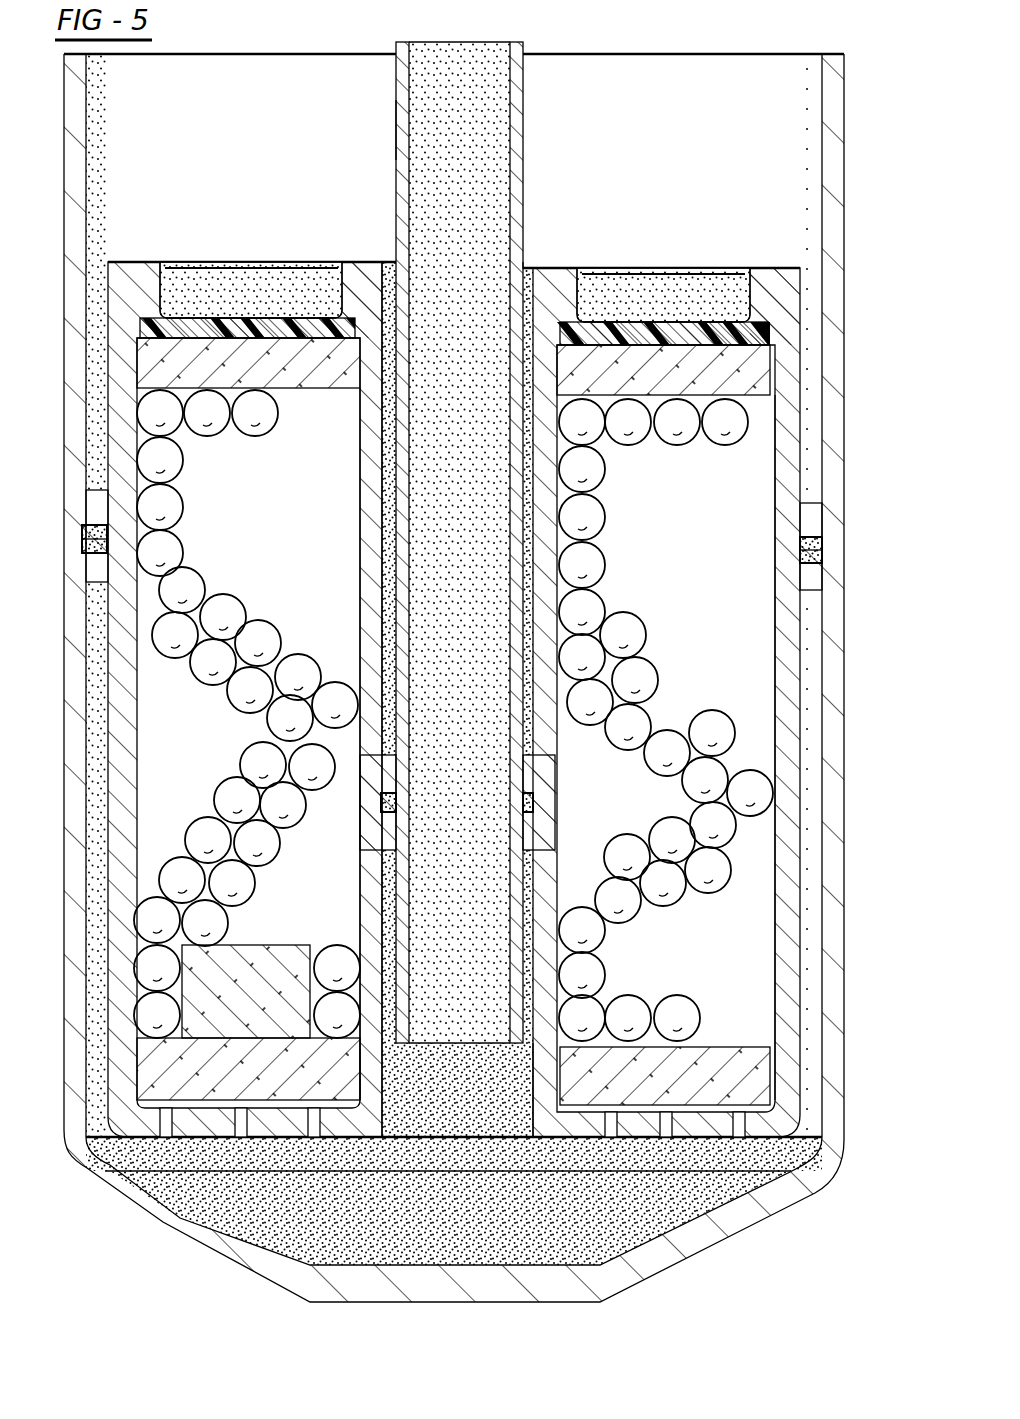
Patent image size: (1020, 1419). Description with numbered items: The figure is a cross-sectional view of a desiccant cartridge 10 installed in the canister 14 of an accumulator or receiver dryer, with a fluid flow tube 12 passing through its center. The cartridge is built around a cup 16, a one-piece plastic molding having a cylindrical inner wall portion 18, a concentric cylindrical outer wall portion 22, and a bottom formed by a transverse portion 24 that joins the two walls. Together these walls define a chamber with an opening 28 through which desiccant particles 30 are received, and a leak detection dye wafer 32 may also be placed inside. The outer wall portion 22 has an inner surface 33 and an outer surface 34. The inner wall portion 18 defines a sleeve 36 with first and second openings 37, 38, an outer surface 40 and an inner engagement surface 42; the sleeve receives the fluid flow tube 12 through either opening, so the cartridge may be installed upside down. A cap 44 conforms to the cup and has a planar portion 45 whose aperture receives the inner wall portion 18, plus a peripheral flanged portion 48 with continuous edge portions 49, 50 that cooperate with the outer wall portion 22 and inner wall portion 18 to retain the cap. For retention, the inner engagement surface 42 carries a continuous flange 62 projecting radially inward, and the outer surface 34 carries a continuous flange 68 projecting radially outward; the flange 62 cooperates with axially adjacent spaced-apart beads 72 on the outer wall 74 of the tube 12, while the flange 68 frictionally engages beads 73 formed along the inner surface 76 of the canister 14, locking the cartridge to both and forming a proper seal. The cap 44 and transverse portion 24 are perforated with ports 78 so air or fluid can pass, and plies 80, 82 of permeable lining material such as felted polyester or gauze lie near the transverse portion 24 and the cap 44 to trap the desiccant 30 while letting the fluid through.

The desiccant cartridge 10 is at (730, 48).
The fluid flow tube 12 is at (514, 124).
The canister 14 is at (834, 92).
The cup 16 is at (97, 790).
The inner wall portion 18 is at (360, 492).
The outer wall portion 22 is at (790, 662).
The transverse portion 24 is at (783, 1185).
The opening 28 is at (205, 258).
The desiccant particles 30 is at (618, 622).
The dye wafer 32 is at (268, 945).
The inner surface 33 is at (775, 600).
The outer surface 34 is at (800, 492).
The sleeve 36 is at (412, 1103).
The first opening 37 is at (526, 258).
The second opening 38 is at (474, 1142).
The outer surface 40 is at (362, 548).
The inner engagement surface 42 is at (380, 626).
The cap 44 is at (606, 310).
The planar portion 45 is at (662, 310).
The peripheral flanged portion 48 is at (745, 300).
The continuous edge portion 49 is at (772, 268).
The continuous edge portion 50 is at (352, 262).
The continuous flange 62 is at (533, 800).
The continuous flange 68 is at (800, 552).
The beads 72 is at (393, 833).
The beads 73 is at (100, 556).
The outer wall 74 is at (396, 128).
The inner surface 76 is at (820, 165).
The ports 78 is at (313, 327).
The ply 80 is at (726, 1062).
The ply 82 is at (752, 385).